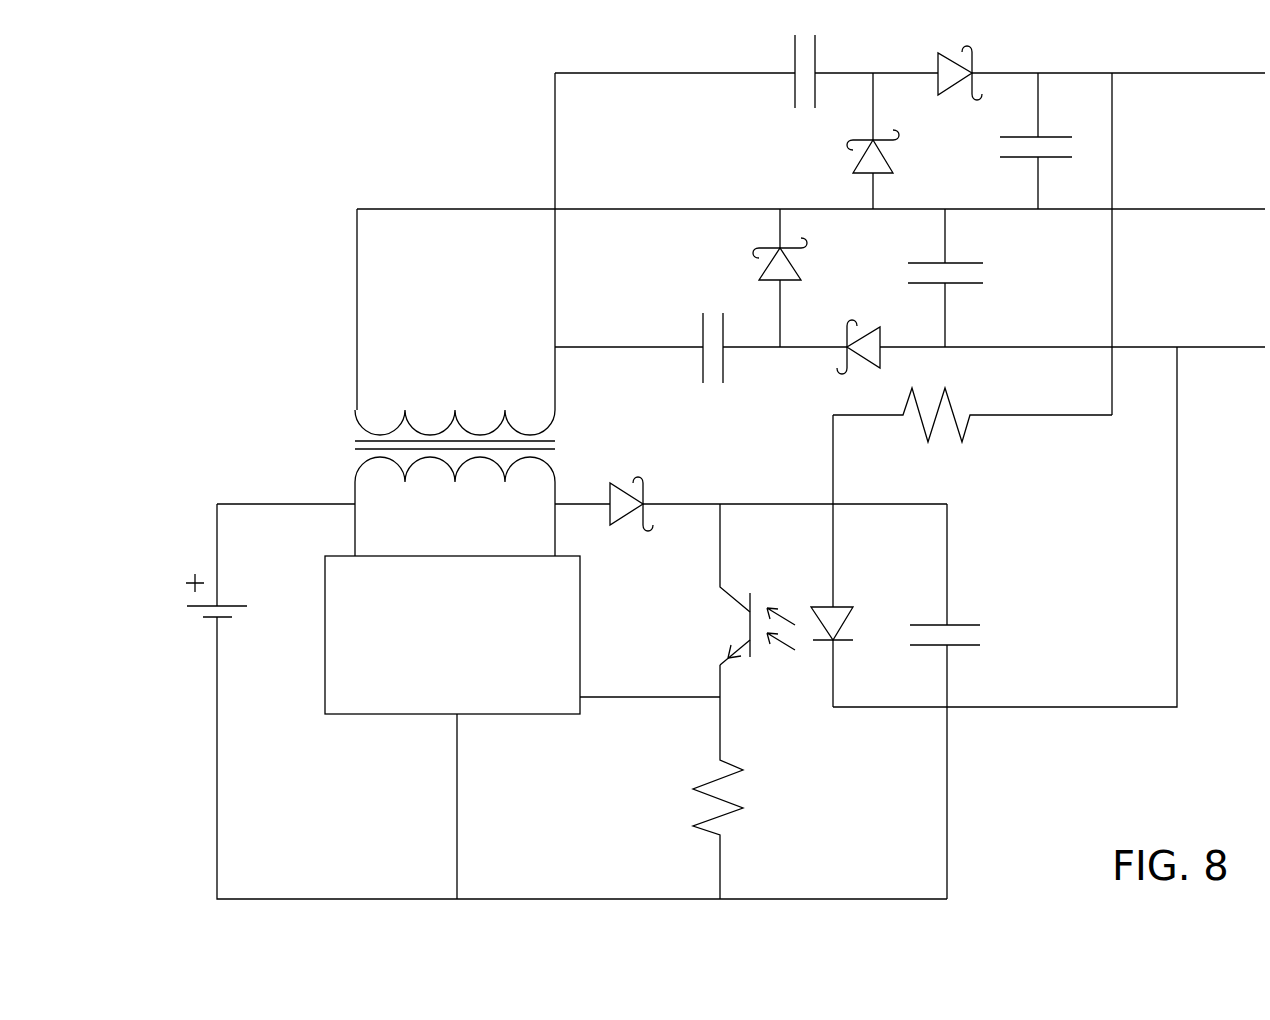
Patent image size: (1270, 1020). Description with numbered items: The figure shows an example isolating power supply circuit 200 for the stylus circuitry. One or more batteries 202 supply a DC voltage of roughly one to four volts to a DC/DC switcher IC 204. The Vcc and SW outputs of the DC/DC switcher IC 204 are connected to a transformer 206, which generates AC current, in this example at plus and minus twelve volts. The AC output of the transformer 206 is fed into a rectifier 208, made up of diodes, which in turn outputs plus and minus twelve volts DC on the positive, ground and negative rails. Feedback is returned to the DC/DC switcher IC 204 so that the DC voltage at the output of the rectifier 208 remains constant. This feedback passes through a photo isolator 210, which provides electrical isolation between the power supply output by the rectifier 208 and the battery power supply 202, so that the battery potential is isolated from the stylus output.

The isolating power supply circuit 200 is at (220, 120).
The batteries 202 is at (210, 618).
The DC/DC switcher IC 204 is at (388, 706).
The transformer 206 is at (355, 441).
The rectifier 208 is at (742, 148).
The photo isolator 210 is at (746, 674).